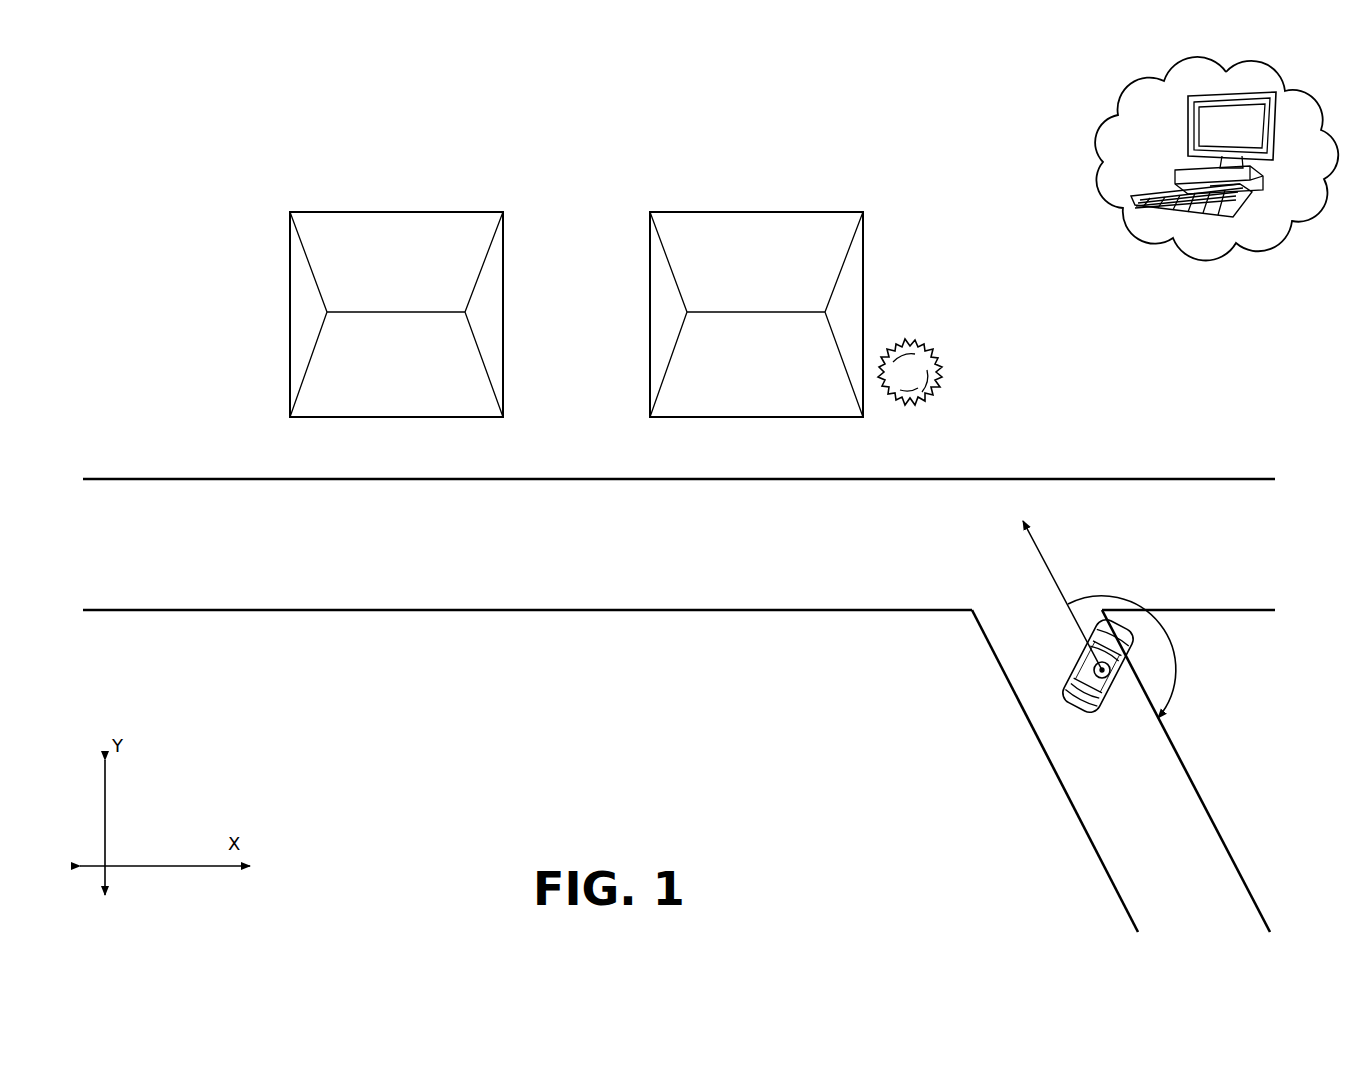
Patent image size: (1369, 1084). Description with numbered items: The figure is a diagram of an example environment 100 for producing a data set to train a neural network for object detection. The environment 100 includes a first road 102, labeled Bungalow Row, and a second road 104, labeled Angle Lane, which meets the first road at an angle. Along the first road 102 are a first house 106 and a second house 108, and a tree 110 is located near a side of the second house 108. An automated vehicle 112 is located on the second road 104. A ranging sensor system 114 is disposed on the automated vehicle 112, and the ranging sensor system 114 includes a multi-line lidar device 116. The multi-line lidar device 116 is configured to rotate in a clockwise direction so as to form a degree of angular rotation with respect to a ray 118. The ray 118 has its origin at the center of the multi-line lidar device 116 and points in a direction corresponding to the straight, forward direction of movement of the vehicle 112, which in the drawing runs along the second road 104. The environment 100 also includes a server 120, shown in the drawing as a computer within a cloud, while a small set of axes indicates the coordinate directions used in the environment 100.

The environment 100 is at (216, 112).
The first road 102 is at (367, 585).
The second road 104 is at (1107, 833).
The first house 106 is at (452, 223).
The second house 108 is at (760, 223).
The tree 110 is at (923, 347).
The automated vehicle 112 is at (1093, 698).
The ranging sensor system 114 is at (989, 663).
The multi-line lidar device 116 is at (1090, 667).
The ray 118 is at (1047, 563).
The server 120 is at (1180, 173).